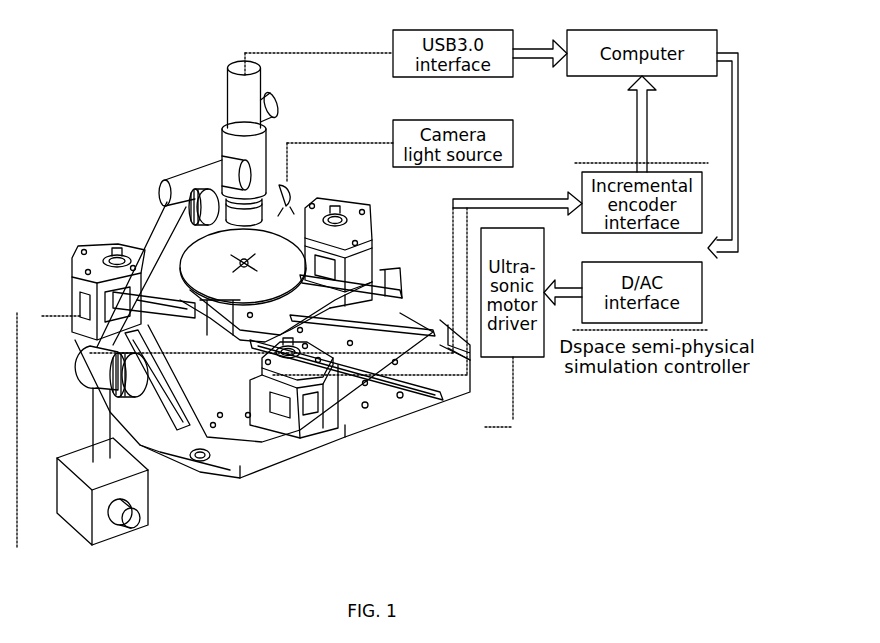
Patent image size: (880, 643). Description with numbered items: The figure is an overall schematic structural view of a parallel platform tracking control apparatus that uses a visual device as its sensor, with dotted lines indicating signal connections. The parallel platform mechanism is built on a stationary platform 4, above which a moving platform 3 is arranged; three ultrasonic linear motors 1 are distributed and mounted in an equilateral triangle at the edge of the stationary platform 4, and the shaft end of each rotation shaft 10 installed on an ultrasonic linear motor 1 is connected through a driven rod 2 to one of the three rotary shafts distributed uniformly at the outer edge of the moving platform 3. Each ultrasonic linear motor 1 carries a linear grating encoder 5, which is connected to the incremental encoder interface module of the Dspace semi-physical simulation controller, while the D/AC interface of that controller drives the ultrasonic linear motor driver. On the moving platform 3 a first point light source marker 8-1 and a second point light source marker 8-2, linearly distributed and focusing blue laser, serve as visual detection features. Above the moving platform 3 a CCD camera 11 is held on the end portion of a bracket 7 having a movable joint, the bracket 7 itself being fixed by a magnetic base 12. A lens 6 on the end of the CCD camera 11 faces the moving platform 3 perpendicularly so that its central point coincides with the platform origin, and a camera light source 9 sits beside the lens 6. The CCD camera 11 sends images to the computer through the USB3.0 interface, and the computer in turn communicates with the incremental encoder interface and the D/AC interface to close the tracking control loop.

The ultrasonic linear motor 1 is at (332, 415).
The driven rod 2 is at (390, 392).
The moving platform 3 is at (290, 277).
The stationary platform 4 is at (230, 468).
The linear grating encoder 5 is at (362, 303).
The lens 6 is at (259, 207).
The bracket 7 is at (197, 183).
The first point light source marker 8-1 is at (245, 262).
The second point light source marker 8-2 is at (333, 217).
The camera light source 9 is at (292, 185).
The rotation shaft 10 is at (111, 251).
The CCD camera 11 is at (243, 133).
The magnetic base 12 is at (98, 482).